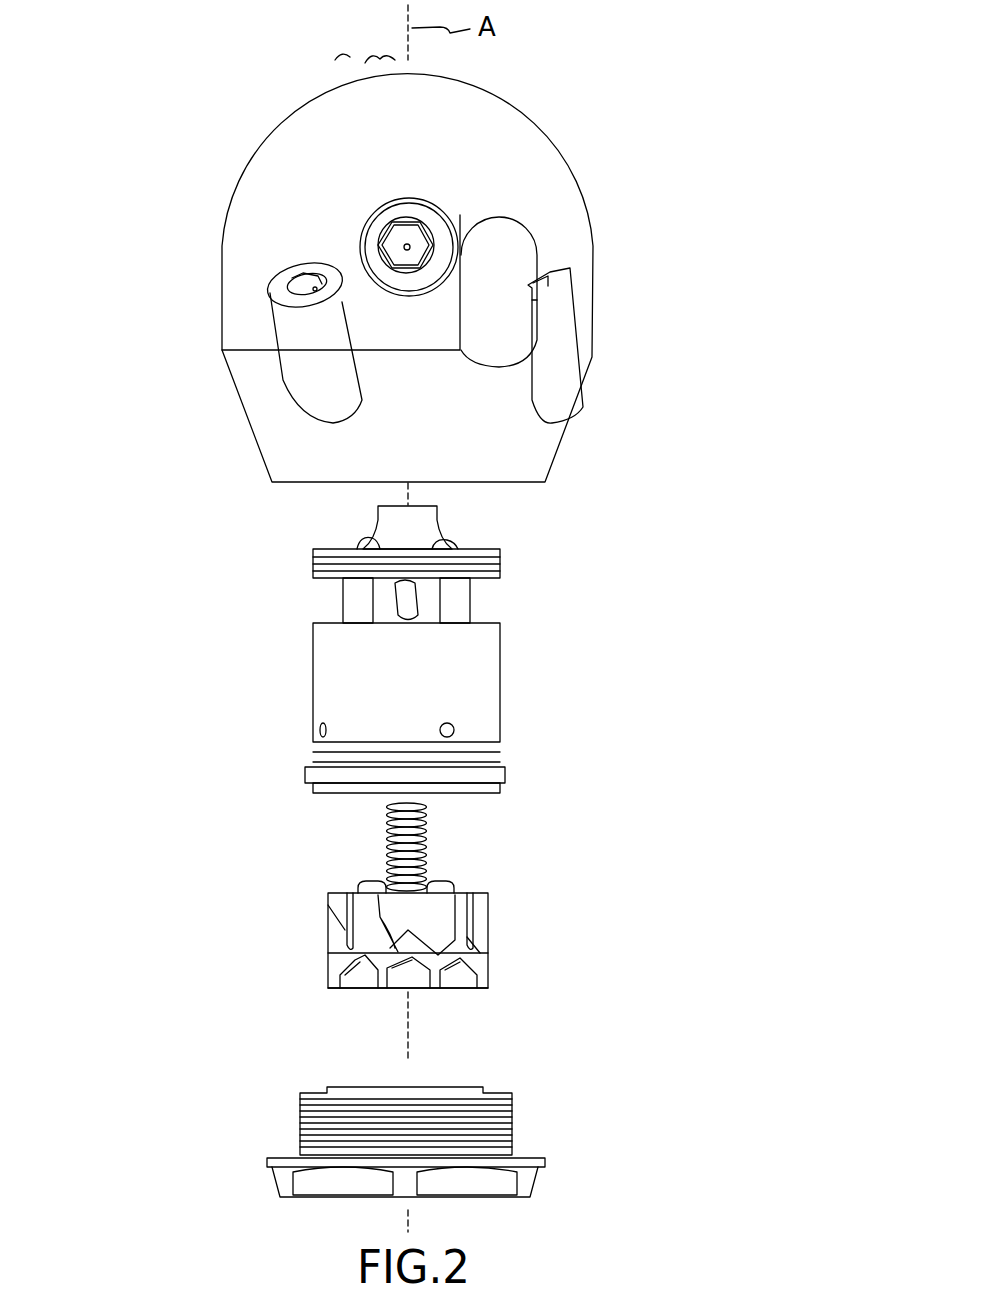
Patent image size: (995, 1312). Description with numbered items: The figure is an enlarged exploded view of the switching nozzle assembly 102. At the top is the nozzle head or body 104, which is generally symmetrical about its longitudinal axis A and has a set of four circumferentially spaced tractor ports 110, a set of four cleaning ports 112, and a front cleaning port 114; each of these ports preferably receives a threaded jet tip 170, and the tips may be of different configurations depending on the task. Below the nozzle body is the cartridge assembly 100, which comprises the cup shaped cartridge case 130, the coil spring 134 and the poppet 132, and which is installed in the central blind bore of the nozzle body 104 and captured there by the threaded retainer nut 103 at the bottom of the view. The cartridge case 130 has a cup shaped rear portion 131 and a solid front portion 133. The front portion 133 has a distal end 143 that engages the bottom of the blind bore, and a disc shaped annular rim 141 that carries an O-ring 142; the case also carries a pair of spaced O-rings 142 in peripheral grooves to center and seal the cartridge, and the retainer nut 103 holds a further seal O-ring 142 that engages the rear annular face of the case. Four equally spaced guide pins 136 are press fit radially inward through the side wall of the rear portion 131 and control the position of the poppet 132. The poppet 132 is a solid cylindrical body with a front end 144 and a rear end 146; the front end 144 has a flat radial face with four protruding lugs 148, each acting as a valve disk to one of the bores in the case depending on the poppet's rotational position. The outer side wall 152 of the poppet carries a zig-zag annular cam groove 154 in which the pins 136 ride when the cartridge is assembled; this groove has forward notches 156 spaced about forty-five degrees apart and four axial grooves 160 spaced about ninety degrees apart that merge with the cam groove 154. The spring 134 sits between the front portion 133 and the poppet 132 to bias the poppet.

The cartridge assembly 100 is at (695, 490).
The nozzle assembly 102 is at (92, 1177).
The threaded retainer nut 103 is at (548, 1158).
The nozzle head 104 is at (577, 178).
The tractor ports 110 is at (285, 272).
The cleaning ports 112 is at (447, 212).
The front cleaning port 114 is at (360, 60).
The cartridge case 130 is at (311, 634).
The rear portion 131 is at (505, 688).
The poppet 132 is at (489, 927).
The front portion 133 is at (545, 493).
The coil spring 134 is at (388, 822).
The guide pins 136 is at (440, 727).
The annular rim 141 is at (318, 556).
The O-ring 142 is at (315, 566).
The distal end 143 is at (372, 508).
The front end 144 is at (470, 895).
The rear end 146 is at (485, 990).
The lugs 148 is at (457, 882).
The outer side wall 152 is at (330, 940).
The cam groove 154 is at (378, 905).
The forward notches 156 is at (370, 990).
The axial grooves 160 is at (347, 920).
The threaded jet tip 170 is at (390, 240).